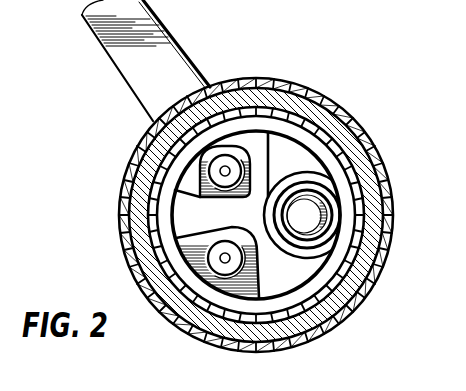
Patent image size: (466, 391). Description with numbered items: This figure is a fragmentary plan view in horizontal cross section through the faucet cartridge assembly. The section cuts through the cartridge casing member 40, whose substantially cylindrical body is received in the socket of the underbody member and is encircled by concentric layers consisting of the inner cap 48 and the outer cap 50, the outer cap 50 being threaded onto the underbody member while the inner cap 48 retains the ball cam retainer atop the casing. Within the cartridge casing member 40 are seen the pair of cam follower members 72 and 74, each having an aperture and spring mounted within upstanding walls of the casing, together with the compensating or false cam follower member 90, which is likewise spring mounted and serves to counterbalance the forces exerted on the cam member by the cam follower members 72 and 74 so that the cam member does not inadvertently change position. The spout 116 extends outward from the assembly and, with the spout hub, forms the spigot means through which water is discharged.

The spout 116 is at (172, 36).
The inner cap 48 is at (328, 123).
The outer cap 50 is at (383, 268).
The cartridge casing member 40 is at (311, 142).
The cam follower member 74 is at (209, 201).
The cam follower member 72 is at (258, 285).
The compensating or false cam follower member 90 is at (312, 219).